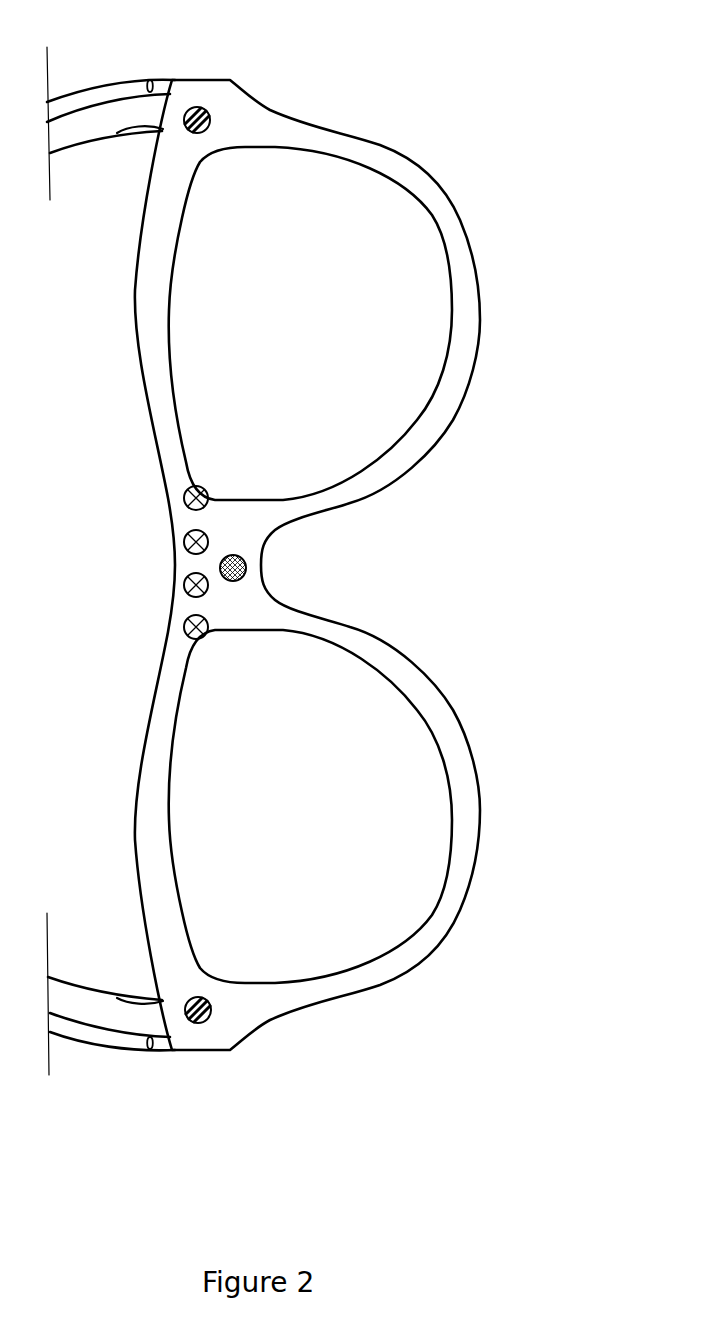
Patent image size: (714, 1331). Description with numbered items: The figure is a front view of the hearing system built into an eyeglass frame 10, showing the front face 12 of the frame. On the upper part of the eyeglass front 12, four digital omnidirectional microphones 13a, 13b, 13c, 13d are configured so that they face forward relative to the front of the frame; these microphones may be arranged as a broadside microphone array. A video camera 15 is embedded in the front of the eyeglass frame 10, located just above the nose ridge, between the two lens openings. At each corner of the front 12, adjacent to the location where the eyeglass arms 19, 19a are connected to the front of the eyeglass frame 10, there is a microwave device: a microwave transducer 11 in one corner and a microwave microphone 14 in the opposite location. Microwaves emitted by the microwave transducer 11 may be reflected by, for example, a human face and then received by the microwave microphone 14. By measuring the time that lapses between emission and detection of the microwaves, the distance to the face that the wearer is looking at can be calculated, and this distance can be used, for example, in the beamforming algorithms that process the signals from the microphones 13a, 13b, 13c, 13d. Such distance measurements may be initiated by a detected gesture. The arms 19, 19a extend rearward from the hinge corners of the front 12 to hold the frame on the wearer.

The eyeglass frame 10 is at (458, 275).
The microwave transducer 11 is at (199, 107).
The front face of the eyeglass frame 12 is at (150, 284).
The digital omnidirectional microphone 13a is at (184, 497).
The digital omnidirectional microphone 13b is at (184, 543).
The digital omnidirectional microphone 13c is at (186, 588).
The digital omnidirectional microphone 13d is at (186, 630).
The microwave microphone 14 is at (208, 1022).
The video camera 15 is at (247, 568).
The eyeglass arm 19 is at (94, 86).
The eyeglass arm 19a is at (98, 1043).